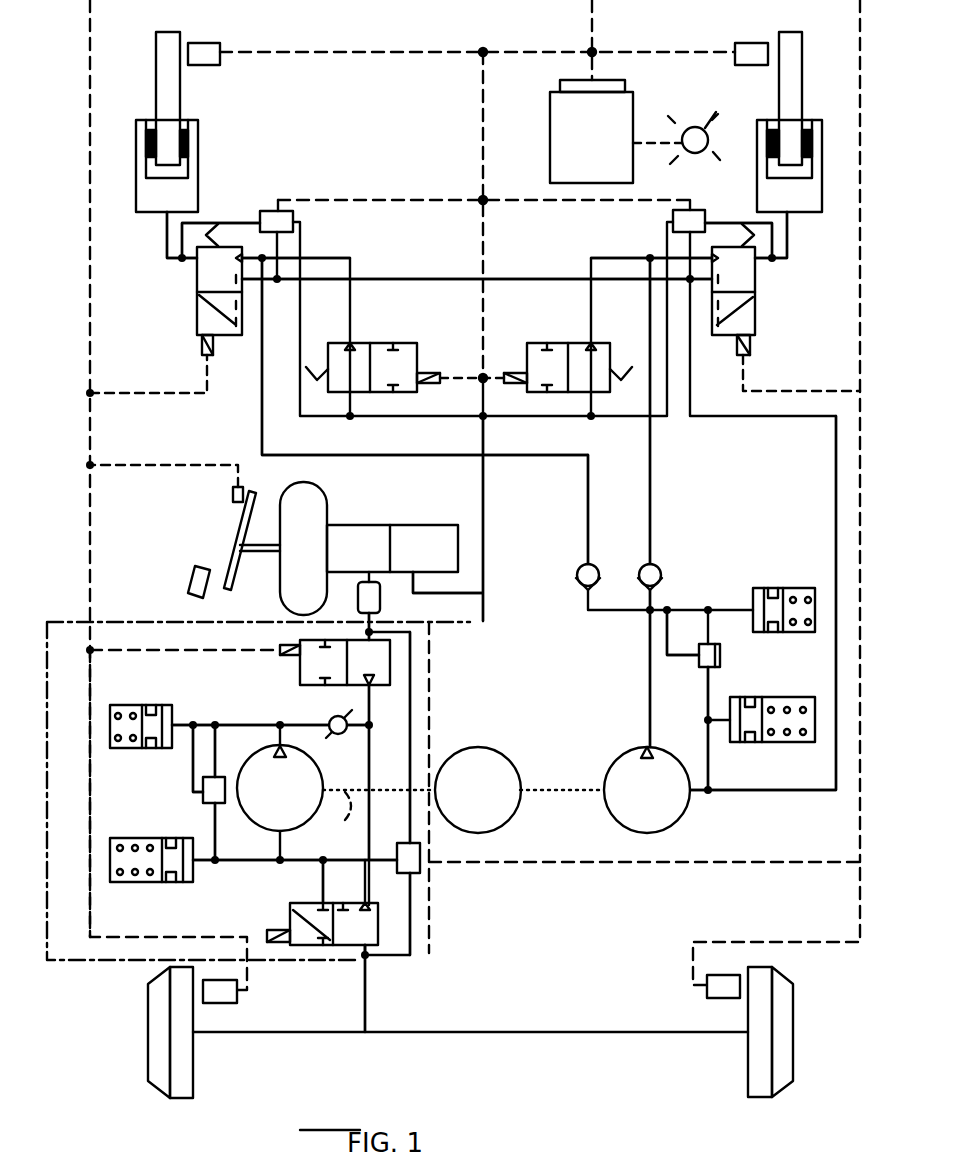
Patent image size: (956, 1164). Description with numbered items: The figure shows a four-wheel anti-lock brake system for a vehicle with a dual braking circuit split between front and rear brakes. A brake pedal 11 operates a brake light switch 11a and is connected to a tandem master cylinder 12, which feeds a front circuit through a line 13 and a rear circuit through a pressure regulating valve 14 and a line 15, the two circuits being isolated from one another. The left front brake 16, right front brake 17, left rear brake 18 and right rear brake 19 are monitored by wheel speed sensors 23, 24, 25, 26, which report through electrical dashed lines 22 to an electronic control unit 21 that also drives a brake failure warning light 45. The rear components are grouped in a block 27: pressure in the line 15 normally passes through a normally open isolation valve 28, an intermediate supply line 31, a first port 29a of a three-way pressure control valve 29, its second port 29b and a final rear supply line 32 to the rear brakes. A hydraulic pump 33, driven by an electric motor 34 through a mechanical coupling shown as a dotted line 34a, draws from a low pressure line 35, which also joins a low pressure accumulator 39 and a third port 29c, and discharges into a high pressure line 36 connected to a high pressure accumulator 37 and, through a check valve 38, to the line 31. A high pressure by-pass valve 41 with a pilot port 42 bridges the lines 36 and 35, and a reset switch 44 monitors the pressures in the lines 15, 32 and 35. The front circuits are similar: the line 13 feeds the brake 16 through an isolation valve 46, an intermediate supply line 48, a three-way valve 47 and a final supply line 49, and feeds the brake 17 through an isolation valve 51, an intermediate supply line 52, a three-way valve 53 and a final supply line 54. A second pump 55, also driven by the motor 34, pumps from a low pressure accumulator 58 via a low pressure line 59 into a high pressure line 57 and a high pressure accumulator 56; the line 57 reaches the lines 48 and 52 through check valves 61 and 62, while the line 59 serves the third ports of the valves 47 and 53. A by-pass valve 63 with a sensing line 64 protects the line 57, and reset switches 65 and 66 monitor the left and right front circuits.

The vehicle brake pedal 11 is at (200, 572).
The brake light switch 11a is at (233, 495).
The dual reservoir tandem master cylinder 12 is at (385, 525).
The front brake line 13 is at (483, 487).
The pressure regulating valve 14 is at (380, 598).
The rear brake line 15 is at (372, 630).
The left front brake 16 is at (130, 133).
The right front brake 17 is at (830, 160).
The left rear brake 18 is at (140, 1056).
The right rear brake 19 is at (800, 1035).
The electronic control unit 21 is at (570, 158).
The dashed lines 22 is at (88, 338).
The wheel speed sensor 23 is at (210, 43).
The wheel speed sensor 24 is at (745, 43).
The wheel speed sensor 25 is at (222, 1003).
The wheel speed sensor 26 is at (718, 1000).
The rear brake control circuit block 27 is at (42, 690).
The isolation valve 28 is at (392, 682).
The three-way pressure control valve 29 is at (343, 945).
The first port 29a is at (373, 900).
The second port 29b is at (370, 953).
The third port 29c is at (315, 900).
The intermediate supply line 31 is at (372, 742).
The final rear supply line 32 is at (368, 996).
The hydraulic pump 33 is at (322, 782).
The electric motor 34 is at (505, 822).
The dotted line 34a is at (331, 824).
The low pressure line 35 is at (260, 862).
The high pressure line 36 is at (237, 725).
The high pressure accumulator 37 is at (123, 705).
The check valve 38 is at (335, 712).
The low pressure accumulator 39 is at (118, 885).
The high pressure by-pass valve 41 is at (203, 795).
The pilot port 42 is at (193, 758).
The reset switch 44 is at (423, 893).
The brake failure warning light 45 is at (703, 122).
The isolation valve 46 is at (385, 343).
The three-way pressure control valve 47 is at (197, 298).
The intermediate supply line 48 is at (348, 258).
The final supply line 49 is at (160, 240).
The isolation valve 51 is at (560, 343).
The intermediate supply line 52 is at (598, 255).
The three-way pressure control valve 53 is at (760, 295).
The final supply line 54 is at (792, 243).
The second pump 55 is at (682, 822).
The high pressure accumulator 56 is at (785, 588).
The high pressure line 57 is at (650, 685).
The low pressure accumulator 58 is at (765, 697).
The low pressure line 59 is at (400, 279).
The check valve 61 is at (580, 565).
The check valve 62 is at (658, 565).
The high pressure by-pass valve 63 is at (700, 665).
The sensing line 64 is at (672, 640).
The reset switch 65 is at (275, 211).
The reset switch 66 is at (702, 212).